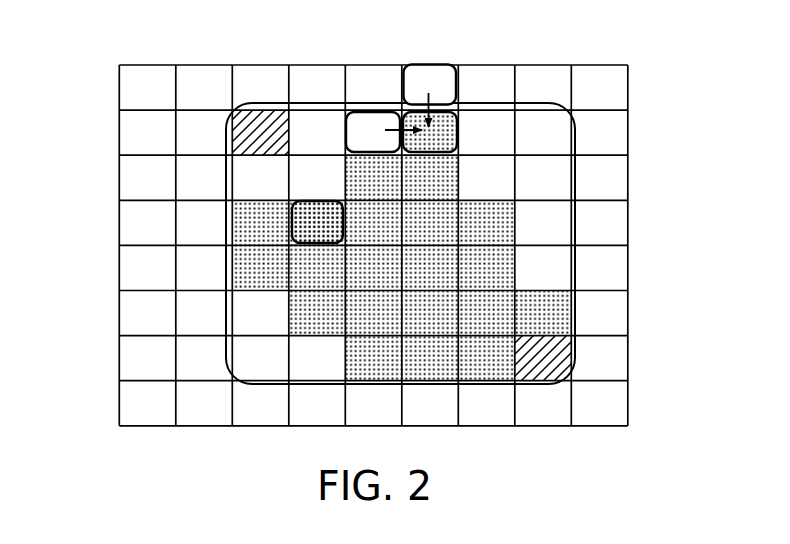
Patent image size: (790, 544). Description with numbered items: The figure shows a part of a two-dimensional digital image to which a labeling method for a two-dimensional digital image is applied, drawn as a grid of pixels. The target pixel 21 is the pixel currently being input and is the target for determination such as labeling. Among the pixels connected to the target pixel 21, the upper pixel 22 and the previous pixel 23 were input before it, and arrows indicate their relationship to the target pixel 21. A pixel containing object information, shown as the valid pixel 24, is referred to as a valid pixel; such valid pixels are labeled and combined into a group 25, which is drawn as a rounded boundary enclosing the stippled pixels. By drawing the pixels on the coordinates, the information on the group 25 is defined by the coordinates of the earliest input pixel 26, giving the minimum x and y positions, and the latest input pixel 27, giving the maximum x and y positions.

The target pixel 21 is at (445, 117).
The upper pixel 22 is at (427, 70).
The previous pixel 23 is at (372, 117).
The valid pixel 24 is at (292, 222).
The group 25 is at (576, 220).
The earliest input pixel 26 is at (261, 117).
The latest input pixel 27 is at (572, 352).